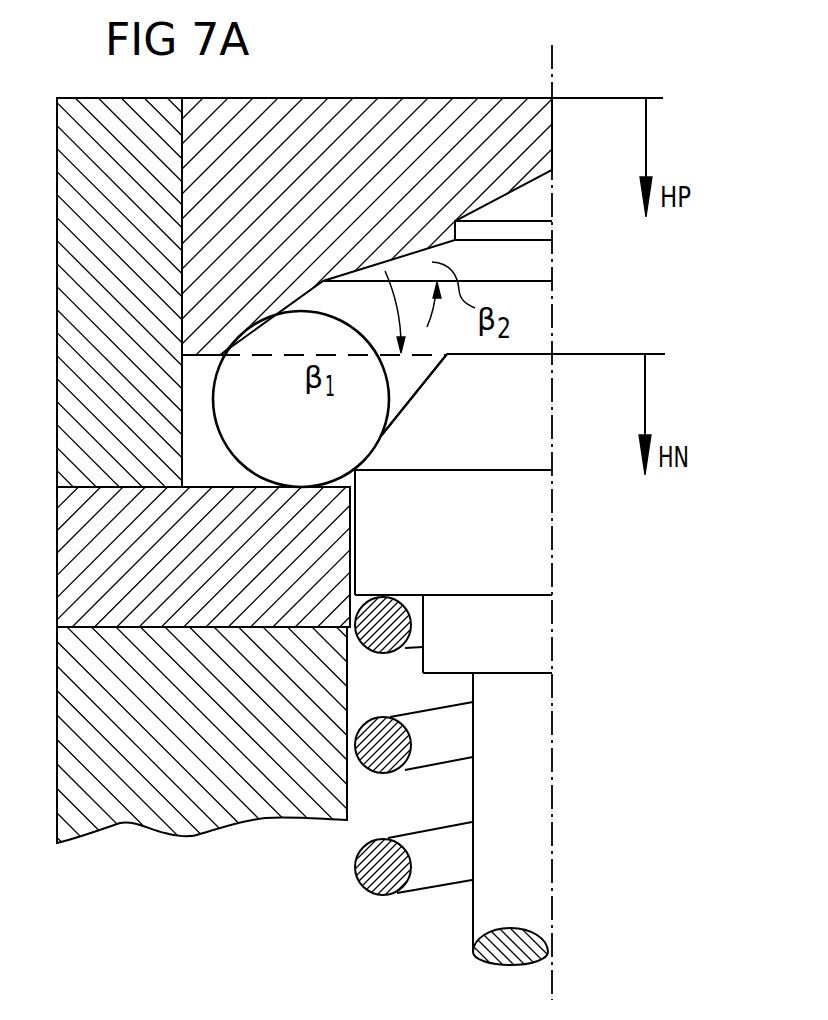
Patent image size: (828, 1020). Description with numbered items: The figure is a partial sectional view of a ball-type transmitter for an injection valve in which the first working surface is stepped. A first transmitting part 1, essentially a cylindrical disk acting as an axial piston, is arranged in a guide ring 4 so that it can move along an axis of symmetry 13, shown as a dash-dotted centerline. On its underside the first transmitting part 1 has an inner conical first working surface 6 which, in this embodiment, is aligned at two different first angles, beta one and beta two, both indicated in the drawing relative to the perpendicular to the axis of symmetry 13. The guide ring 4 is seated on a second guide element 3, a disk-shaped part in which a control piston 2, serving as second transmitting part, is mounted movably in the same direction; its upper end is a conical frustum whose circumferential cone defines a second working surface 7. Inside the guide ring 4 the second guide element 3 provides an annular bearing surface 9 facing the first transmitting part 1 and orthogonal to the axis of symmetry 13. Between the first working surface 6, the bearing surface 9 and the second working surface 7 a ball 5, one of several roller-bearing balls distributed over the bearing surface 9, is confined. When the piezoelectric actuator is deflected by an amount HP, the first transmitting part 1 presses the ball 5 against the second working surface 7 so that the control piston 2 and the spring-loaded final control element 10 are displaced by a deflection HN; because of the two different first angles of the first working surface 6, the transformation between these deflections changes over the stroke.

The first transmitting part 1 is at (488, 118).
The control piston 2 is at (503, 410).
The second guide element 3 is at (80, 557).
The guide ring 4 is at (80, 293).
The ball 5 is at (242, 413).
The first working surface 6 is at (303, 280).
The second working surface 7 is at (400, 428).
The bearing surface 9 is at (306, 496).
The final control element 10 is at (535, 822).
The axis of symmetry 13 is at (553, 318).